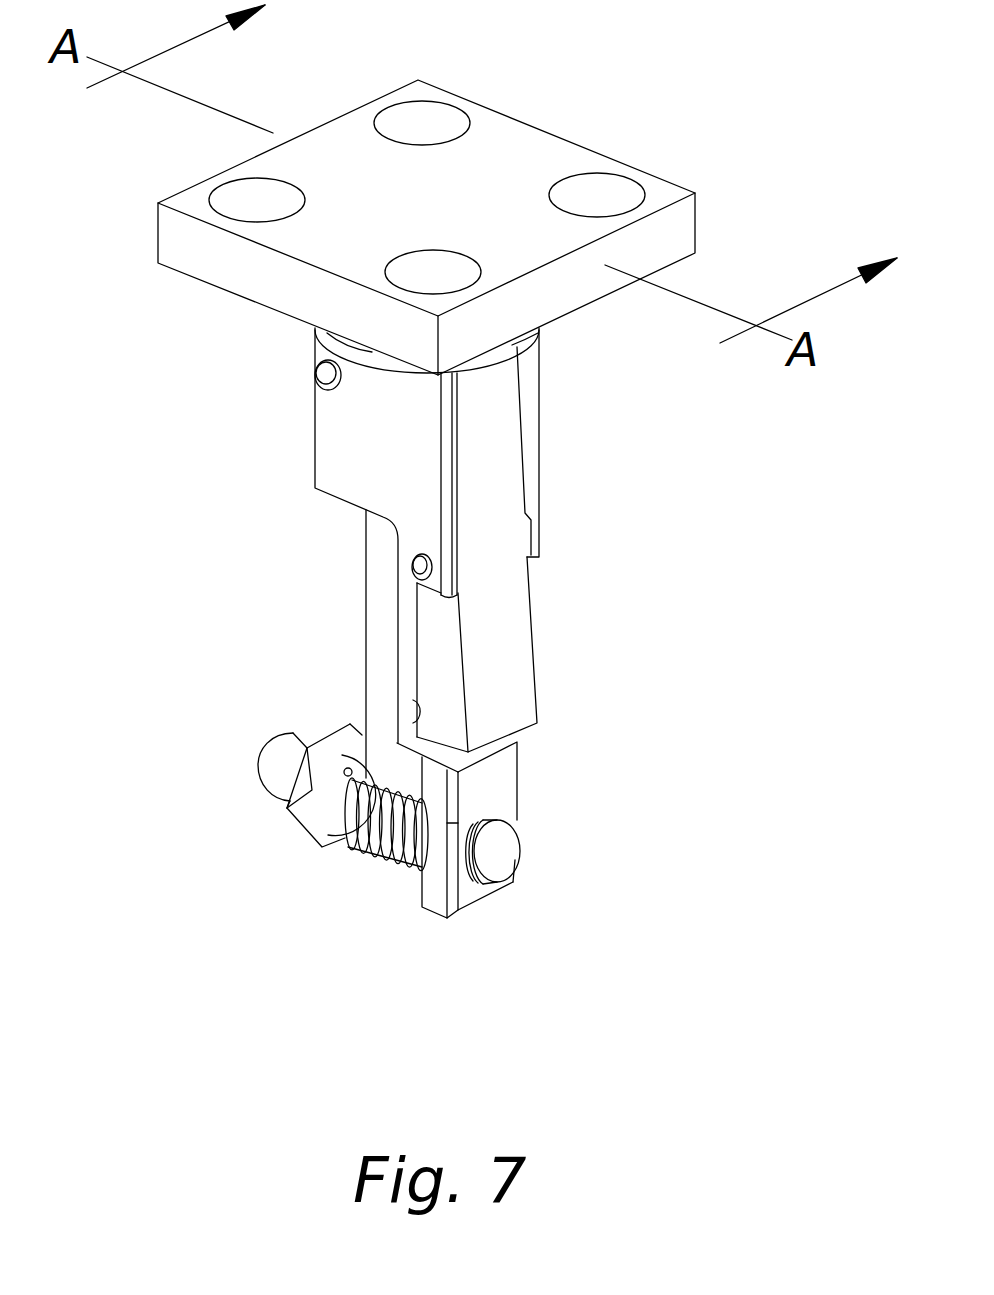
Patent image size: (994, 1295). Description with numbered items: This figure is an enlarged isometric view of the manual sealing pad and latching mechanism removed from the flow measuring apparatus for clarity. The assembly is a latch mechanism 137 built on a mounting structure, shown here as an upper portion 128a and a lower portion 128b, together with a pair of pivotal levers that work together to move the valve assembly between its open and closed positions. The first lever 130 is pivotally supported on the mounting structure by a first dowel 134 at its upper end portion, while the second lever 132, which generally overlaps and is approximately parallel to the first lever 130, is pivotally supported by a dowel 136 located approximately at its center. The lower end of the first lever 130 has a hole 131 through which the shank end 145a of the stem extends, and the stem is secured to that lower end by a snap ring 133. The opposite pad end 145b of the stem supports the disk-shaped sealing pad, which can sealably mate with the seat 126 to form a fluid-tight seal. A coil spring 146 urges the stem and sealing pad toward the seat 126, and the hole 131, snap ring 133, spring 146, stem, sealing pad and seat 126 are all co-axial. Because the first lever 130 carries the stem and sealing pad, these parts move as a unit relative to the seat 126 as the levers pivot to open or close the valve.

The mounting plate 128a is at (692, 208).
The support block 128b is at (537, 467).
The first dowel 134 is at (318, 384).
The dowel 136 is at (413, 581).
The latch mechanism 137 is at (587, 603).
The first lever 130 is at (373, 695).
The second lever 132 is at (535, 710).
The hole 131 is at (459, 877).
The snap ring 133 is at (476, 881).
The shank end 145a is at (508, 847).
The spring 146 is at (403, 853).
The seat 126 is at (303, 832).
The pad end 145b is at (347, 843).